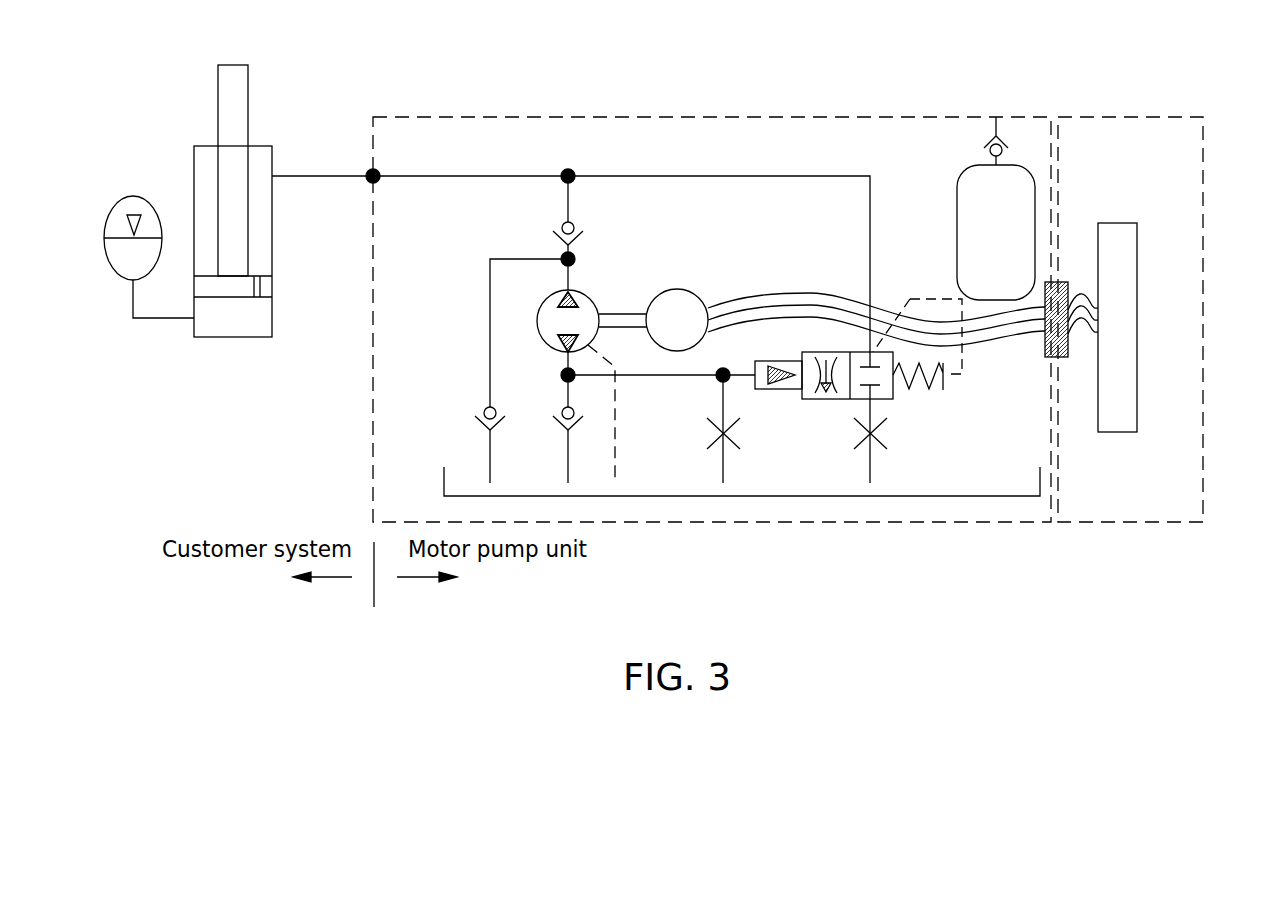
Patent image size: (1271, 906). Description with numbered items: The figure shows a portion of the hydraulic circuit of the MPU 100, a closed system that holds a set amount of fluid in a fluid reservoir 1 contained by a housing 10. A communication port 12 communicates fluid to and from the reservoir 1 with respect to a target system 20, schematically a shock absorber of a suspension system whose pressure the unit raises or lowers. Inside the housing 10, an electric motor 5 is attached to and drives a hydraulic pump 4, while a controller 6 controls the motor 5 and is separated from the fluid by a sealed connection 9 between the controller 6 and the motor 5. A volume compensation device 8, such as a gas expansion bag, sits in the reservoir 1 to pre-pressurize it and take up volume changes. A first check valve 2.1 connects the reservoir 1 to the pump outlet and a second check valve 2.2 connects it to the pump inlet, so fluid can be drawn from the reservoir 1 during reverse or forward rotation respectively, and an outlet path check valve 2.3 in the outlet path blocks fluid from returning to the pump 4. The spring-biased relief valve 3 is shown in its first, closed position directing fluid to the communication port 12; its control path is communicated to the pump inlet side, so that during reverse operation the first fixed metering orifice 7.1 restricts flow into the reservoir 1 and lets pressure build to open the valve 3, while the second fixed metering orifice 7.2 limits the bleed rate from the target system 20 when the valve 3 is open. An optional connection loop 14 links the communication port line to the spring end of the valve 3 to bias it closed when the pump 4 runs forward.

The fluid reservoir 1 is at (421, 481).
The target system 20 is at (200, 65).
The communication port 12 is at (358, 155).
The housing 10 is at (744, 100).
The MPU 100 is at (1168, 98).
The first check valve 2.1 is at (483, 407).
The second check valve 2.2 is at (561, 407).
The outlet path check valve 2.3 is at (563, 222).
The hydraulic pump 4 is at (537, 320).
The electric motor 5 is at (676, 289).
The relief valve 3 is at (776, 392).
The first fixed metering orifice 7.1 is at (707, 437).
The second fixed metering orifice 7.2 is at (884, 440).
The connection loop 14 is at (975, 380).
The volume compensation device 8 is at (957, 228).
The sealed connection 9 is at (1045, 347).
The controller 6 is at (1138, 327).